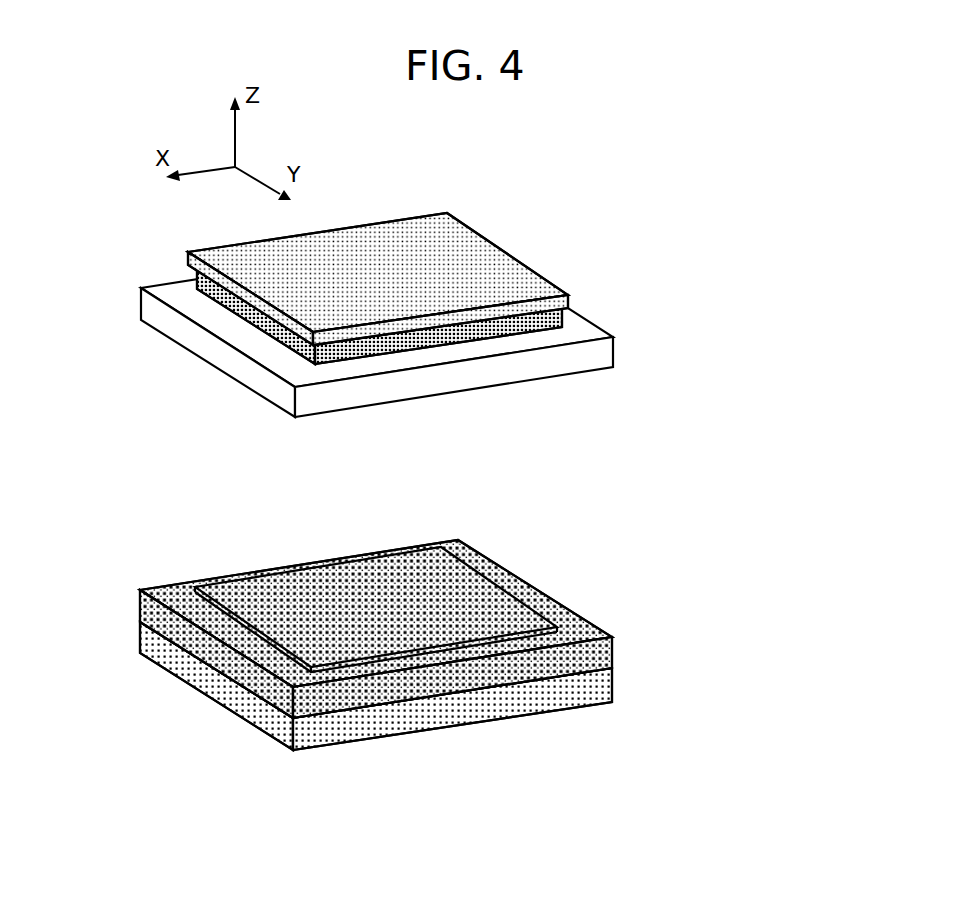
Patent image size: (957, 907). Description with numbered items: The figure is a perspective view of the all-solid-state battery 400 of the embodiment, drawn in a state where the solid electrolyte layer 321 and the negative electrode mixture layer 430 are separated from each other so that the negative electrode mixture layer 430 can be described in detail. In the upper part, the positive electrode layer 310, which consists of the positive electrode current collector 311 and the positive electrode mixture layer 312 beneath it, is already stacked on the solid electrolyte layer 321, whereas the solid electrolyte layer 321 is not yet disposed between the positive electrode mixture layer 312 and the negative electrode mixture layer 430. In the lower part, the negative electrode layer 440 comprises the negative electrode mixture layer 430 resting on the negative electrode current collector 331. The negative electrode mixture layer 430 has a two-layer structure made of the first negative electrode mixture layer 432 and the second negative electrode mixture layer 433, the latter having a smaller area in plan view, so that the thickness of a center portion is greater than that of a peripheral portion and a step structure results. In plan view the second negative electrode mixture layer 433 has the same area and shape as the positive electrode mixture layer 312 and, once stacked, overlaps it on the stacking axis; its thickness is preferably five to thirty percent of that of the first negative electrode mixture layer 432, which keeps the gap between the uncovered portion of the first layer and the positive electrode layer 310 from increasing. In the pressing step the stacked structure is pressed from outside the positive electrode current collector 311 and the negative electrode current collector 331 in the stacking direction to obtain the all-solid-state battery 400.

The all-solid-state battery 400 is at (132, 208).
The positive electrode layer 310 is at (497, 278).
The positive electrode current collector 311 is at (505, 280).
The positive electrode mixture layer 312 is at (572, 315).
The solid electrolyte layer 321 is at (577, 357).
The negative electrode layer 440 is at (515, 630).
The negative electrode mixture layer 430 is at (473, 614).
The second negative electrode mixture layer 433 is at (445, 605).
The first negative electrode mixture layer 432 is at (597, 653).
The negative electrode current collector 331 is at (580, 692).